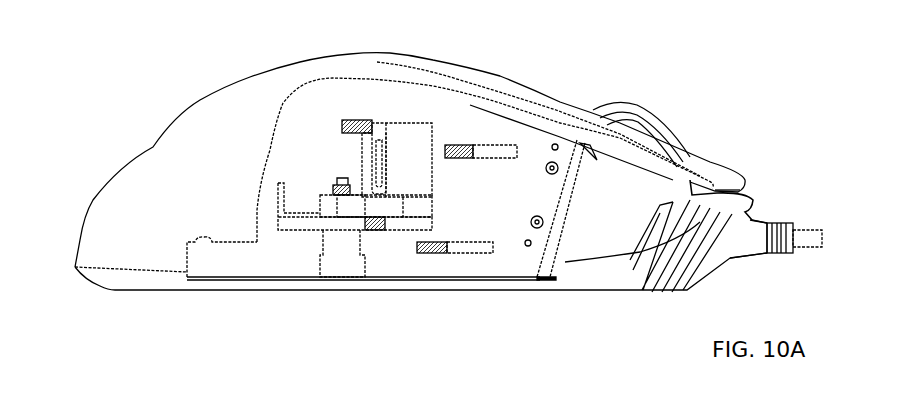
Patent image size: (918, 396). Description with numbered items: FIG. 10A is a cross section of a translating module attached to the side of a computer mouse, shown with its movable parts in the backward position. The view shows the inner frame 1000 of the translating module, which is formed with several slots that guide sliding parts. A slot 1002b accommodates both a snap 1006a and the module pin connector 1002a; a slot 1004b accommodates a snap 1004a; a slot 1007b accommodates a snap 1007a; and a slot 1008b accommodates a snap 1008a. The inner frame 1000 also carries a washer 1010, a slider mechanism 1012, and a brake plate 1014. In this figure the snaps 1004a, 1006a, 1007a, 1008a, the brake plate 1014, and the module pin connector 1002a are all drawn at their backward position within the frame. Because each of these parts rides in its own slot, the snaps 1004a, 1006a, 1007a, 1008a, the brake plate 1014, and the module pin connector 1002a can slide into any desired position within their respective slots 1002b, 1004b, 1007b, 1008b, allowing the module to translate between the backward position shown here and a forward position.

The inner frame 1000 is at (257, 223).
The module pin connector 1002a is at (380, 138).
The slot 1002b is at (413, 140).
The snap 1004a is at (468, 147).
The slot 1004b is at (518, 153).
The snap 1006a is at (352, 122).
The snap 1007a is at (378, 230).
The slot 1007b is at (402, 230).
The snap 1008a is at (434, 252).
The slot 1008b is at (482, 252).
The washer 1010 is at (332, 182).
The slider mechanism 1012 is at (328, 217).
The brake plate 1014 is at (293, 227).